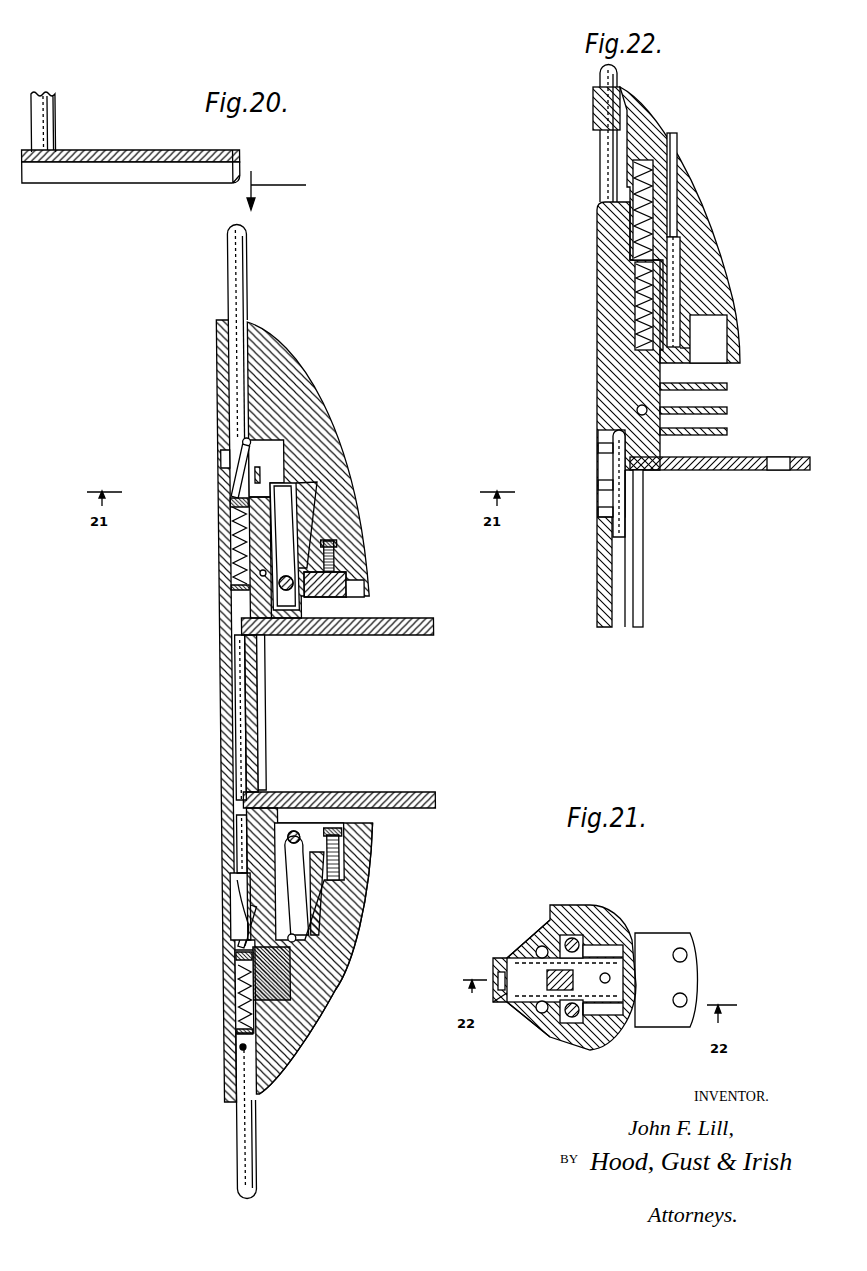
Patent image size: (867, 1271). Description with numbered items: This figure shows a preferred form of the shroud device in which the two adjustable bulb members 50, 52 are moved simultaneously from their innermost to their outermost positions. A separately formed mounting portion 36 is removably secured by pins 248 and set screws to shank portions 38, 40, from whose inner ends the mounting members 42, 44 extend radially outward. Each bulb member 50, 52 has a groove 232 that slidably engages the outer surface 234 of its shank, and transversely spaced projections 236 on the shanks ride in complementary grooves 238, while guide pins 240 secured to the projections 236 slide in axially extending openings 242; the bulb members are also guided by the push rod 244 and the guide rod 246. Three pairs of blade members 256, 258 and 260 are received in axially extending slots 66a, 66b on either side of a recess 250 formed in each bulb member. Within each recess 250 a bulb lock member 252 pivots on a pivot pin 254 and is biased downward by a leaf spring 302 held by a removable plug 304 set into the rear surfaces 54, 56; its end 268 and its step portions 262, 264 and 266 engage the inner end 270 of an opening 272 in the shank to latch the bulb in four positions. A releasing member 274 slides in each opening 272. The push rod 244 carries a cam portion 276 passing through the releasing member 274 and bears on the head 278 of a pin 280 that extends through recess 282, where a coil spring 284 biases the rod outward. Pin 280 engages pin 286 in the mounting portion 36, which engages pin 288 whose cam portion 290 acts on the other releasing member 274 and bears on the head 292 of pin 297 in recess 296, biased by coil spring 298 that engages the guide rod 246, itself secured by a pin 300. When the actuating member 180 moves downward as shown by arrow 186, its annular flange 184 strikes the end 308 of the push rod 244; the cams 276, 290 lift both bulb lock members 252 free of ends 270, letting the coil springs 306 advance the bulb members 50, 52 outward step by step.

In FIG. 20, the actuating member 180 is at (149, 149).
In FIG. 20, the annular flange 184 is at (241, 161).
In FIG. 20, the arrow 186 is at (294, 190).
In FIG. 20, the end of push rod 308 is at (248, 231).
In FIG. 20, the push rod 244 is at (235, 333).
In FIG. 22, the push rod 244 is at (598, 155).
In FIG. 20, the shank portion 38 is at (223, 382).
In FIG. 22, the shank portion 38 is at (597, 212).
In FIG. 21, the shank portion 38 is at (525, 943).
In FIG. 20, the bulb member 50 is at (307, 380).
In FIG. 22, the bulb member 50 is at (713, 212).
In FIG. 21, the bulb member 50 is at (618, 907).
In FIG. 20, the groove 232 is at (300, 425).
In FIG. 20, the outer surface of shank portion 234 is at (273, 440).
In FIG. 20, the cam portion 276 is at (248, 463).
In FIG. 21, the cam portion 276 is at (508, 998).
In FIG. 20, the opening 272 is at (228, 460).
In FIG. 21, the opening 272 is at (530, 997).
In FIG. 20, the releasing member 274 is at (223, 480).
In FIG. 21, the releasing member 274 is at (507, 957).
In FIG. 20, the inner end of opening 270 is at (277, 473).
In FIG. 20, the bulb lock member 252 is at (282, 518).
In FIG. 21, the bulb lock member 252 is at (570, 943).
In FIG. 20, the recess 250 is at (305, 490).
In FIG. 20, the leaf spring 302 is at (297, 507).
In FIG. 21, the leaf spring 302 is at (603, 1010).
In FIG. 20, the removable plug 304 is at (347, 583).
In FIG. 20, the rear surface 54 is at (363, 602).
In FIG. 20, the pivot pin 254 is at (292, 590).
In FIG. 20, the pin 280 is at (240, 612).
In FIG. 20, the head 278 is at (228, 510).
In FIG. 20, the coil spring 284 is at (227, 550).
In FIG. 20, the recess 282 is at (227, 580).
In FIG. 20, the mounting member 42 is at (433, 622).
In FIG. 22, the mounting member 42 is at (793, 457).
In FIG. 21, the mounting member 42 is at (697, 943).
In FIG. 20, the mounting portion 36 is at (252, 712).
In FIG. 22, the mounting portion 36 is at (637, 567).
In FIG. 20, the pin 286 is at (240, 685).
In FIG. 20, the mounting member 44 is at (420, 808).
In FIG. 20, the rear surface 56 is at (360, 825).
In FIG. 20, the bulb member 52 is at (350, 962).
In FIG. 20, the pin 288 is at (238, 823).
In FIG. 20, the first step portion 262 is at (282, 910).
In FIG. 20, the step portion 266 is at (282, 858).
In FIG. 20, the step portion 264 is at (282, 888).
In FIG. 20, the end of bulb lock member 268 is at (293, 940).
In FIG. 20, the head 292 is at (300, 987).
In FIG. 20, the cam portion 290 is at (243, 922).
In FIG. 20, the shank portion 40 is at (240, 968).
In FIG. 20, the pin 297 is at (235, 988).
In FIG. 20, the recess 296 is at (240, 1008).
In FIG. 20, the coil spring 298 is at (243, 1027).
In FIG. 20, the pin 300 is at (243, 1047).
In FIG. 20, the guide rod 246 is at (253, 1187).
In FIG. 22, the coil spring 306 is at (637, 222).
In FIG. 21, the coil spring 306 is at (547, 947).
In FIG. 22, the opening 242 is at (668, 155).
In FIG. 22, the groove 238 is at (680, 275).
In FIG. 22, the guide pin 240 is at (673, 305).
In FIG. 21, the guide pin 240 is at (575, 940).
In FIG. 22, the axially extending slot 66a is at (713, 327).
In FIG. 21, the axially extending slot 66a is at (608, 1007).
In FIG. 21, the axially extending slot 66b is at (615, 952).
In FIG. 22, the projection 236 is at (675, 352).
In FIG. 22, the blade member 260 is at (727, 387).
In FIG. 22, the blade member 258 is at (730, 410).
In FIG. 22, the blade member 256 is at (730, 432).
In FIG. 22, the pin 248 is at (620, 458).